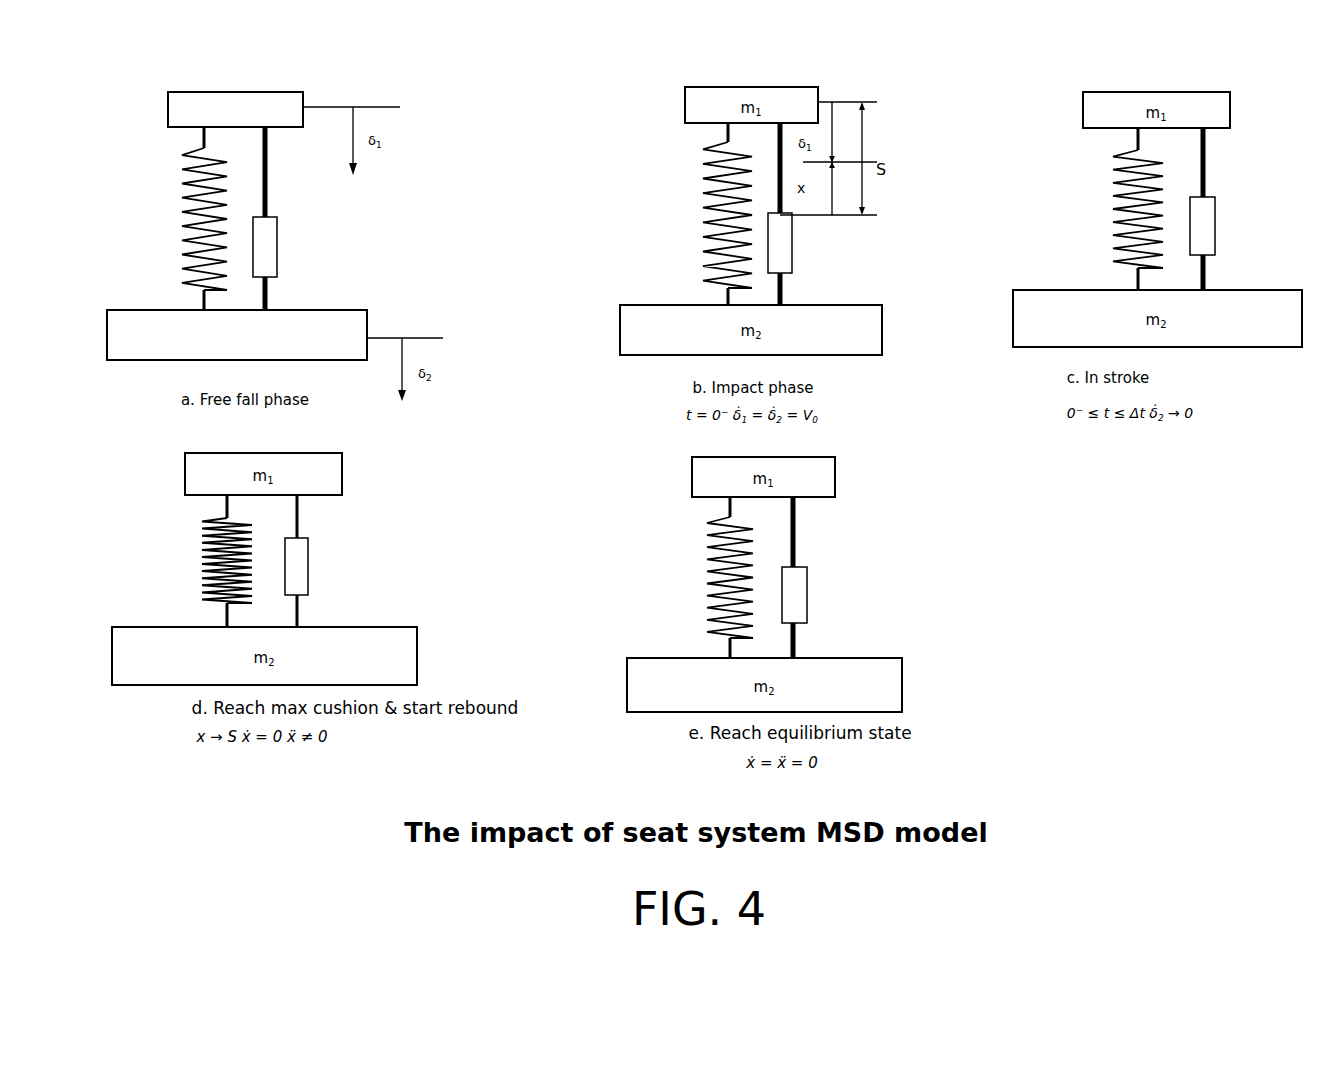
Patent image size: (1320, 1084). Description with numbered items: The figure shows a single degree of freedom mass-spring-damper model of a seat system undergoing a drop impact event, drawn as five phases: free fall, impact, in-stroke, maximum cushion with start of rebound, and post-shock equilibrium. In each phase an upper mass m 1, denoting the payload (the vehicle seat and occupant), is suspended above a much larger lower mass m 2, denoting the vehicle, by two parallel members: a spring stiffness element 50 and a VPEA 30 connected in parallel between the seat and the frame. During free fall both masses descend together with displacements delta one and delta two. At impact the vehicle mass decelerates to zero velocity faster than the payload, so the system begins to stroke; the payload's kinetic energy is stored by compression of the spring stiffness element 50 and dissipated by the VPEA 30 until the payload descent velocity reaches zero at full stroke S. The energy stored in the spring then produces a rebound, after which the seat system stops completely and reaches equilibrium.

The spring stiffness element 50 is at (181, 218).
The VPEA 30 is at (308, 218).
The mass m1 (occupant) 1 is at (235, 109).
The mass m2 (seat) 2 is at (237, 335).